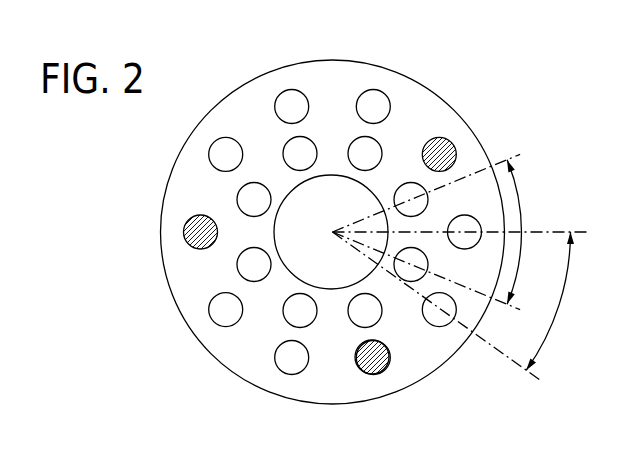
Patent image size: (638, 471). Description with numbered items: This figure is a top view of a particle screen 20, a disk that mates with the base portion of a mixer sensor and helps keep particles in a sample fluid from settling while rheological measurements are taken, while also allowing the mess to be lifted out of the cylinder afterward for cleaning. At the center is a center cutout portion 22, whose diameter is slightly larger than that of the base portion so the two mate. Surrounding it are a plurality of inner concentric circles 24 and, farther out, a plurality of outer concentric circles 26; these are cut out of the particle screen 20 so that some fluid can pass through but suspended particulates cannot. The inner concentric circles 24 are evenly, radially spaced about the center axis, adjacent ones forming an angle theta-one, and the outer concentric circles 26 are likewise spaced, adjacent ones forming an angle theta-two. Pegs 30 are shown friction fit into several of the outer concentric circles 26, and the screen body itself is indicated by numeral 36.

The particle screen 20 is at (526, 43).
The center cutout portion 22 is at (301, 252).
The inner concentric circles 24 is at (255, 176).
The outer concentric circles 26 is at (290, 91).
The pegs 30 is at (454, 148).
The plate 36 is at (184, 194).